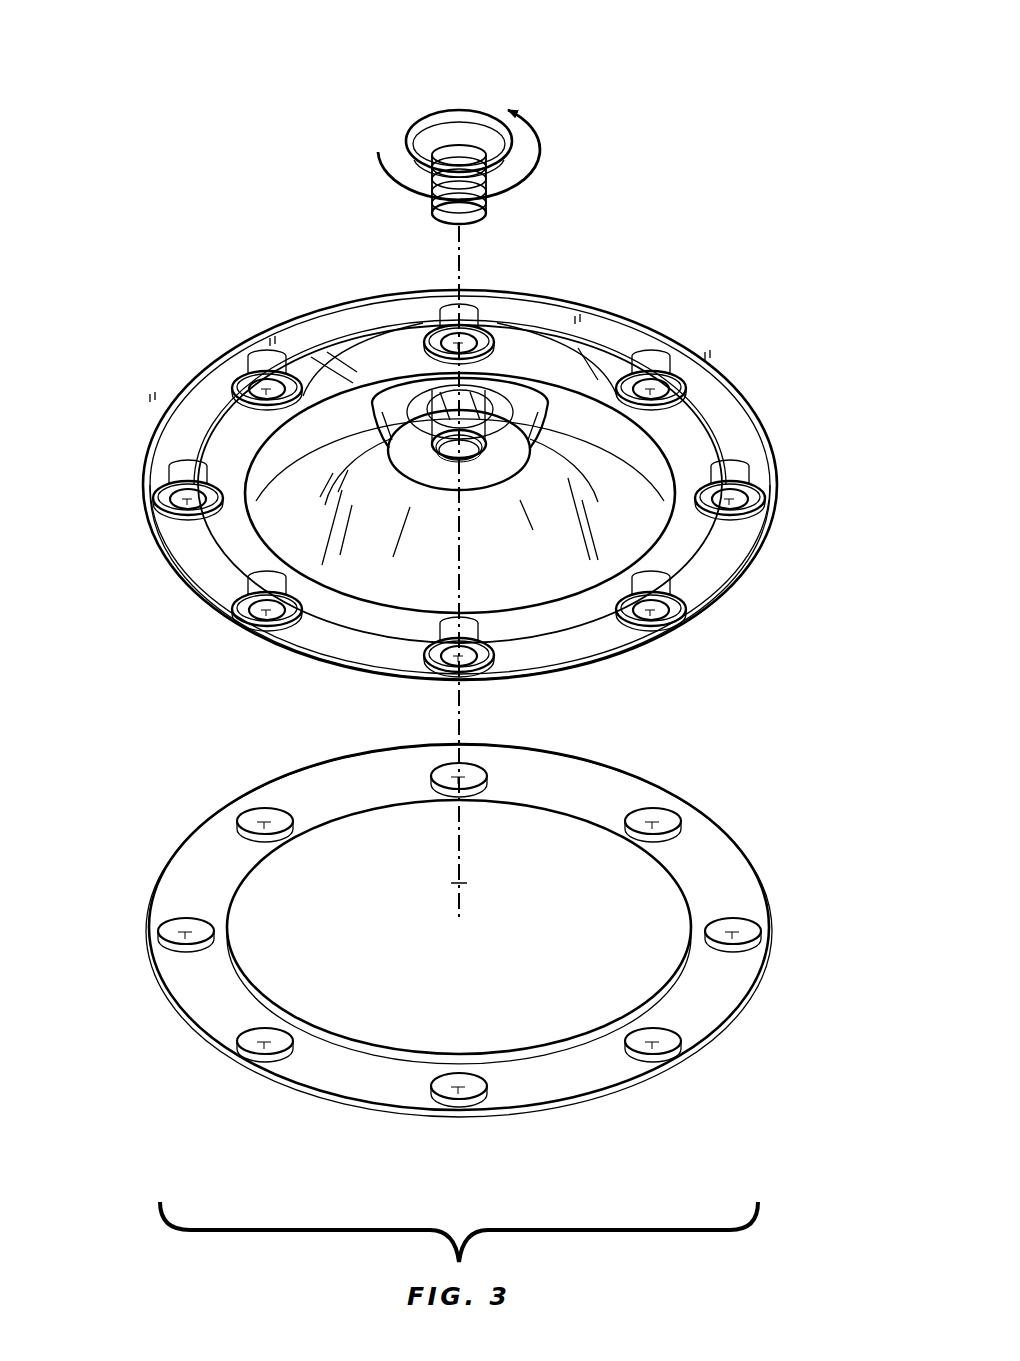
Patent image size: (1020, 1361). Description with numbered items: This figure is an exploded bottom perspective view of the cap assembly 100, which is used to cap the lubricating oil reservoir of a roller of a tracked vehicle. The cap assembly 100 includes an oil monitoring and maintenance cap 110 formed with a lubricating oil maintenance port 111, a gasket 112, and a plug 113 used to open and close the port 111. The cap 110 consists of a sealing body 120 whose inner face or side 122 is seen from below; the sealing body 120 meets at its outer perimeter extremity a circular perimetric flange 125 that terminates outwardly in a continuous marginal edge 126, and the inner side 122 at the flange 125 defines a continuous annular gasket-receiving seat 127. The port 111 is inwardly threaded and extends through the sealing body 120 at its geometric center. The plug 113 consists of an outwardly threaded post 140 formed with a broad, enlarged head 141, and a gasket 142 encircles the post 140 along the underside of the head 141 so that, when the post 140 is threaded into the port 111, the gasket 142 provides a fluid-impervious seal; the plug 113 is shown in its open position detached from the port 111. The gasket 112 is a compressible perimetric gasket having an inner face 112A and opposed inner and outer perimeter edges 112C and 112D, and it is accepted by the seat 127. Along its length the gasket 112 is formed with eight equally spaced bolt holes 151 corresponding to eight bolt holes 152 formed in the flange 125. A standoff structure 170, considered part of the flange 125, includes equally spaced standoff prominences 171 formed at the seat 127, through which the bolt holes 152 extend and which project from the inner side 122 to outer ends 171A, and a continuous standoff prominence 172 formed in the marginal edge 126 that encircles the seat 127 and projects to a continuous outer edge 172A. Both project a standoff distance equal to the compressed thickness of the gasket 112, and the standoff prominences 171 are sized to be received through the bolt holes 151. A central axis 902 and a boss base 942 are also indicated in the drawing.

The cap assembly 100 is at (716, 98).
The oil monitoring and maintenance cap 110 is at (470, 487).
The lubricating oil maintenance port 111 is at (452, 455).
The gasket 112 is at (459, 915).
The inner face of gasket 112A is at (703, 883).
The inner perimeter edge of gasket 112C is at (597, 830).
The outer perimeter edge of gasket 112D is at (712, 823).
The plug 113 is at (475, 104).
The sealing body 120 is at (724, 556).
The inner face or side of sealing body 122 is at (593, 468).
The perimetric flange 125 is at (246, 510).
The marginal edge 126 is at (603, 303).
The gasket-receiving seat 127 is at (207, 553).
The threaded post 140 is at (454, 121).
The head 141 is at (432, 112).
The gasket 142 is at (432, 160).
The bolt holes 151 is at (455, 772).
The bolt holes 152 is at (459, 338).
The standoff structure 170 is at (470, 482).
The standoff prominences 171 is at (425, 330).
The outer end of standoff prominence 171A is at (500, 326).
The continuous standoff prominence 172 is at (357, 668).
The continuous outer edge 172A is at (326, 666).
The central axis 902 is at (457, 897).
The boss base 942 is at (263, 622).